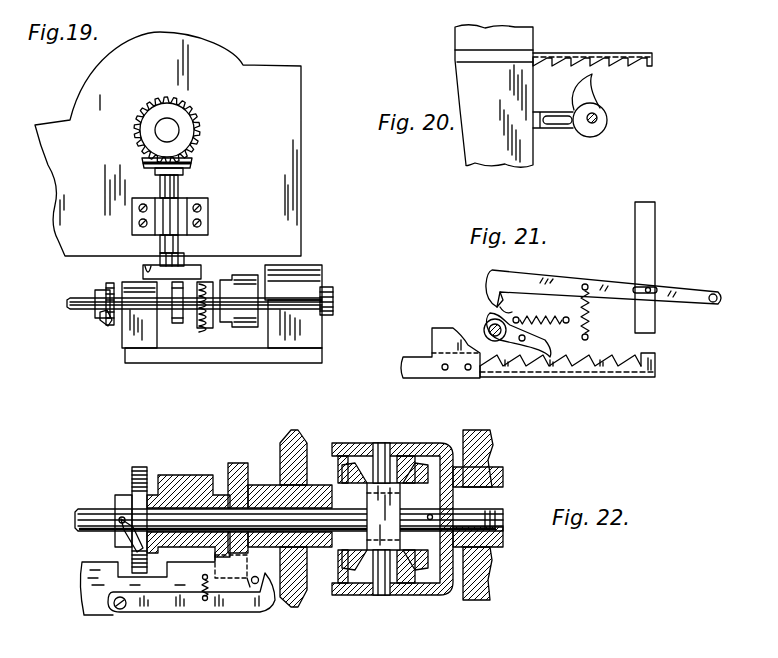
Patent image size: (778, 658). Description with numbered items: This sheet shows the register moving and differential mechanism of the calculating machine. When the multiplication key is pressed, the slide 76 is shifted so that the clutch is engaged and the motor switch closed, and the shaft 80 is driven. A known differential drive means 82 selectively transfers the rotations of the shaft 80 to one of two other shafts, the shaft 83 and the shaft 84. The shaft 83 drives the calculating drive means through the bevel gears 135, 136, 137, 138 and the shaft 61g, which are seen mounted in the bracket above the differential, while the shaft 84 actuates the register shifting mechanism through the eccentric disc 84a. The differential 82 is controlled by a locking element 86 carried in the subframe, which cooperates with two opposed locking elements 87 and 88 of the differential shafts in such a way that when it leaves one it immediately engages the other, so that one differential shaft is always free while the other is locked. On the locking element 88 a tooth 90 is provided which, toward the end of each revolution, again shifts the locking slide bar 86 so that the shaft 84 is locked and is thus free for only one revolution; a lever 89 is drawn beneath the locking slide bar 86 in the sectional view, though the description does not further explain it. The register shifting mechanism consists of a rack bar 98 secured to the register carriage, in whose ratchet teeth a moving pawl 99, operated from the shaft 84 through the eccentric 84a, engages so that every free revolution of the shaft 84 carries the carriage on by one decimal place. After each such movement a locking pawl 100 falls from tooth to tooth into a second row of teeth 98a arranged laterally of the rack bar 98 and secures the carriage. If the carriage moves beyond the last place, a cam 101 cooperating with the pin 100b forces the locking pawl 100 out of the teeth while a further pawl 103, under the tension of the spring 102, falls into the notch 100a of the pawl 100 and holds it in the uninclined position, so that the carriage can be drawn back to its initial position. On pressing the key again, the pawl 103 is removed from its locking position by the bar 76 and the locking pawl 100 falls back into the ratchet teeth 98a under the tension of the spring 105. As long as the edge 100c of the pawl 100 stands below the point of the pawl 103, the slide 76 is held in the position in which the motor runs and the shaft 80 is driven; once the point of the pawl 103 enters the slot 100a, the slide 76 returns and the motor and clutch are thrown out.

In FIG. 19, the shaft 61g is at (170, 128).
In FIG. 19, the bevel gear 137 is at (191, 156).
In FIG. 19, the bevel gear 138 is at (140, 148).
In FIG. 19, the bevel gear 136 is at (190, 266).
In FIG. 19, the bevel gear 135 is at (210, 277).
In FIG. 22, the bevel gear 135 is at (300, 455).
In FIG. 19, the opposed locking element 88 is at (107, 288).
In FIG. 22, the opposed locking element 88 is at (148, 468).
In FIG. 19, the shaft 84 is at (73, 303).
In FIG. 20, the shaft 84 is at (594, 117).
In FIG. 22, the shaft 84 is at (78, 520).
In FIG. 19, the tooth 90 is at (106, 318).
In FIG. 22, the tooth 90 is at (127, 527).
In FIG. 19, the opposed locking element 87 is at (177, 326).
In FIG. 22, the opposed locking element 87 is at (232, 470).
In FIG. 19, the shaft 83 is at (195, 308).
In FIG. 22, the shaft 83 is at (265, 490).
In FIG. 19, the differential drive means 82 is at (240, 315).
In FIG. 22, the differential drive means 82 is at (433, 587).
In FIG. 19, the shaft 80 is at (330, 292).
In FIG. 22, the shaft 80 is at (486, 490).
In FIG. 20, the rack bar 98 is at (588, 56).
In FIG. 21, the rack bar 98 is at (576, 375).
In FIG. 20, the second row of teeth 98a is at (632, 54).
In FIG. 21, the second row of teeth 98a is at (576, 357).
In FIG. 20, the moving pawl 99 is at (588, 99).
In FIG. 20, the eccentric disc 84a is at (587, 127).
In FIG. 21, the slide 76 is at (647, 248).
In FIG. 21, the further pawl 103 is at (516, 278).
In FIG. 21, the locking pawl 100 is at (488, 323).
In FIG. 21, the notch 100a is at (500, 307).
In FIG. 21, the pin 100b is at (525, 338).
In FIG. 21, the edge 100c is at (496, 312).
In FIG. 21, the cam 101 is at (450, 338).
In FIG. 21, the spring 105 is at (537, 318).
In FIG. 21, the spring 102 is at (588, 332).
In FIG. 22, the locking element 86 is at (96, 597).
In FIG. 22, the lever 89 is at (258, 600).